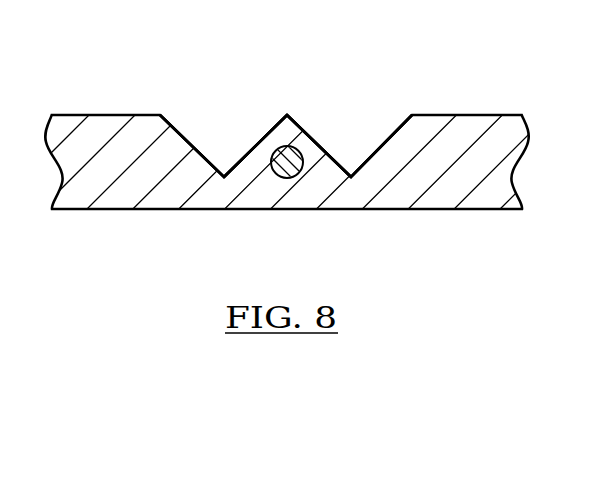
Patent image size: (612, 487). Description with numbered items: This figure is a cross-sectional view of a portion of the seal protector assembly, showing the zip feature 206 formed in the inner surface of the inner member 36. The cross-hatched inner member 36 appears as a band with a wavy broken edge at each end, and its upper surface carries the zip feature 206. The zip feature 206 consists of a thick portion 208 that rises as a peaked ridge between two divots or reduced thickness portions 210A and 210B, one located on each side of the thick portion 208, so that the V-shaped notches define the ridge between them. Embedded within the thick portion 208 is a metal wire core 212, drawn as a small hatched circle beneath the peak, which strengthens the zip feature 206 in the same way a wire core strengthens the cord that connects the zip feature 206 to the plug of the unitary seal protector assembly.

The inner member 36 is at (472, 115).
The zip feature 206 is at (315, 85).
The thick portion 208 is at (287, 115).
The divot or reduced thickness portion 210A is at (223, 175).
The divot or reduced thickness portion 210B is at (351, 176).
The metal wire core 212 is at (288, 178).